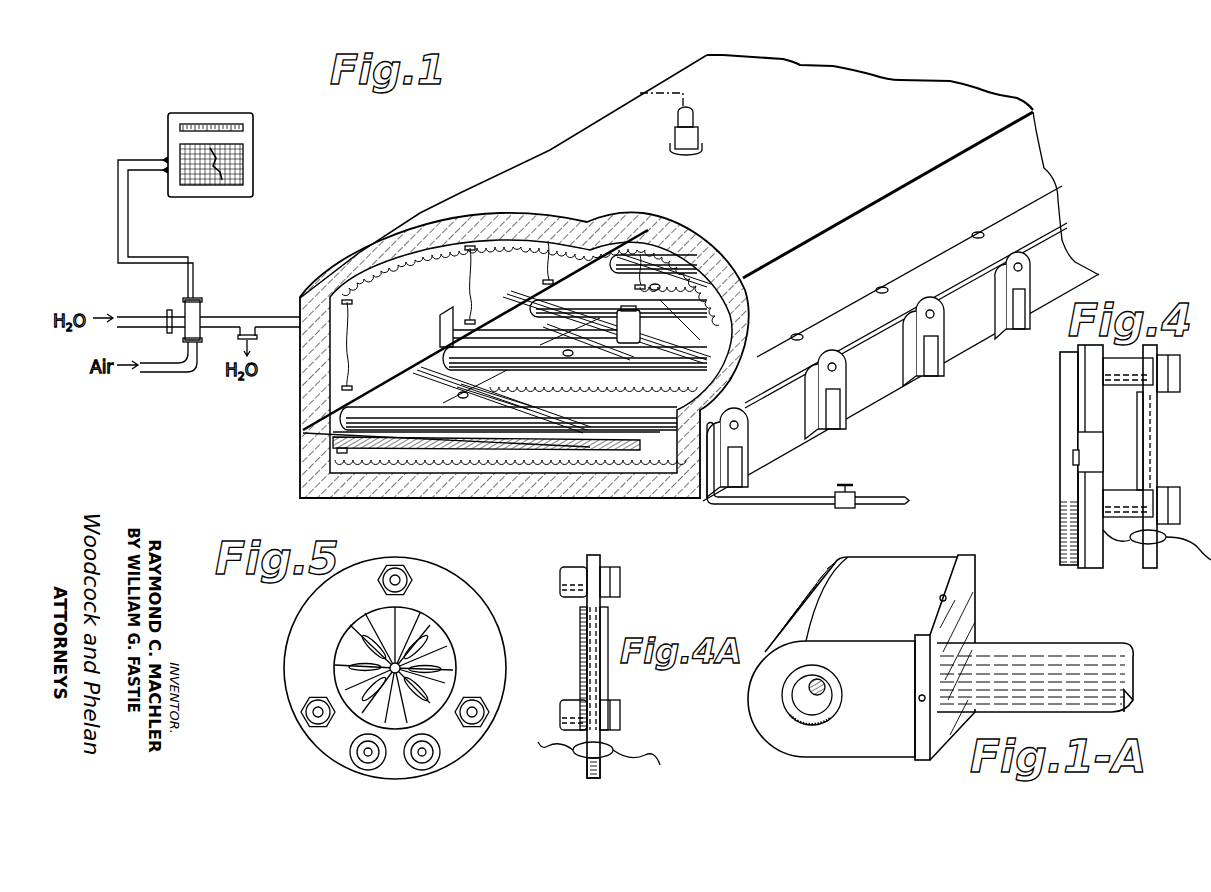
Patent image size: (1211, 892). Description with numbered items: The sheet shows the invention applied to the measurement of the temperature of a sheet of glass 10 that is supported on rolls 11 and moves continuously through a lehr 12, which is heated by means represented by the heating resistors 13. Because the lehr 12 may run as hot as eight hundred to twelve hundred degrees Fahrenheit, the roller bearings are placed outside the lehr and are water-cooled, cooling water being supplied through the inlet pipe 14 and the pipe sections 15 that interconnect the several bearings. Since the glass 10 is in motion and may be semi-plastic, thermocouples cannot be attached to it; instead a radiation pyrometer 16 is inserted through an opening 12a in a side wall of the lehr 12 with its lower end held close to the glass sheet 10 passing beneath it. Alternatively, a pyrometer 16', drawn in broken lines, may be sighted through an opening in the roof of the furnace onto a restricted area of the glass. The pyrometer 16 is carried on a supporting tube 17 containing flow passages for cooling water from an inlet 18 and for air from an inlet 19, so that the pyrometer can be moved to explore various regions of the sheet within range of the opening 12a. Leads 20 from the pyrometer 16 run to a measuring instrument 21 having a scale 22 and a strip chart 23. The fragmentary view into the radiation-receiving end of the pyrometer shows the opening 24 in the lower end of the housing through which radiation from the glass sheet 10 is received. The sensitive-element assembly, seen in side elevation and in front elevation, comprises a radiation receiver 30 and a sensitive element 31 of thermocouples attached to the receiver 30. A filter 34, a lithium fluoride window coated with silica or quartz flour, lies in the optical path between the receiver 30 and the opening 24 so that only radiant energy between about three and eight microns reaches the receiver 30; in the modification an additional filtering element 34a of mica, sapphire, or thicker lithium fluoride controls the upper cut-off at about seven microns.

In FIG. 1, the sheet of glass 10 is at (545, 442).
In FIG. 1, the rolls 11 is at (525, 342).
In FIG. 1, the lehr 12 is at (534, 140).
In FIG. 1, the opening 12a is at (440, 322).
In FIG. 1, the heating resistors 13 is at (418, 257).
In FIG. 1, the inlet pipe 14 is at (790, 503).
In FIG. 1, the pipe sections 15 is at (777, 398).
In FIG. 1, the radiation pyrometer 16 is at (610, 307).
In FIG. 1-A, the radiation pyrometer 16 is at (837, 657).
In FIG. 1, the pyrometer 16' is at (713, 124).
In FIG. 1, the supporting tube 17 is at (275, 313).
In FIG. 1-A, the supporting tube 17 is at (1070, 643).
In FIG. 1, the inlet 18 is at (137, 313).
In FIG. 1, the inlet 19 is at (170, 373).
In FIG. 1, the leads 20 is at (118, 228).
In FIG. 5, the leads 20 is at (357, 790).
In FIG. 1, the measuring instrument 21 is at (250, 143).
In FIG. 1, the scale 22 is at (218, 122).
In FIG. 1, the strip chart 23 is at (237, 176).
In FIG. 1-A, the opening 24 is at (812, 690).
In FIG. 4, the radiation receiver 30 is at (1073, 456).
In FIG. 5, the radiation receiver 30 is at (417, 677).
In FIG. 4, the sensitive element 31 is at (1075, 445).
In FIG. 5, the sensitive element 31 is at (427, 650).
In FIG. 4, the filter 34 is at (1130, 465).
In FIG. 4A, the filter 34 is at (582, 663).
In FIG. 4A, the additional filtering element 34a is at (608, 632).